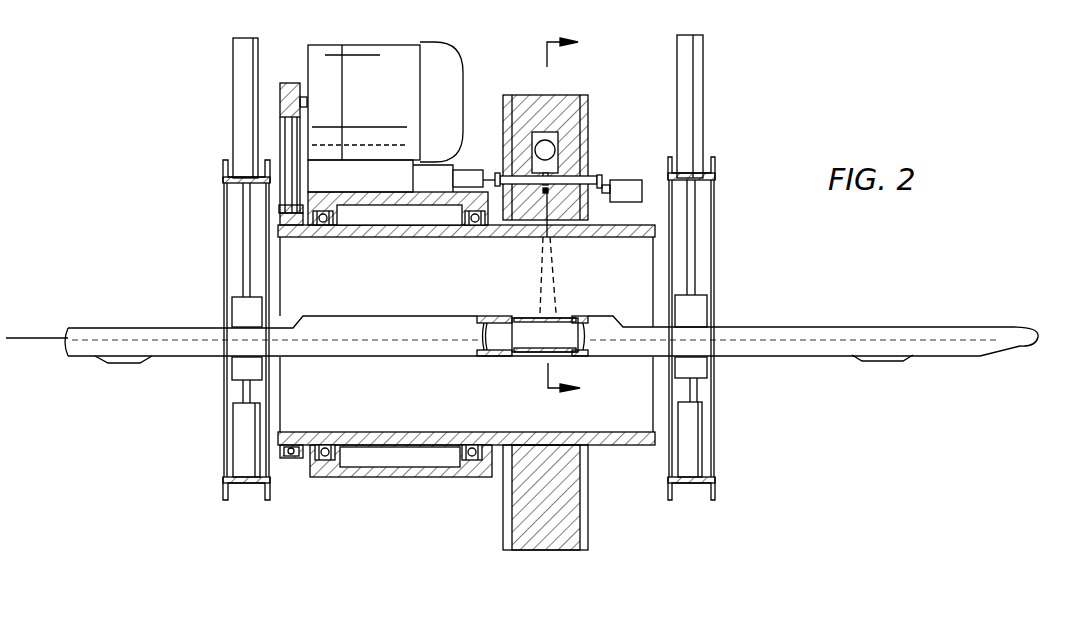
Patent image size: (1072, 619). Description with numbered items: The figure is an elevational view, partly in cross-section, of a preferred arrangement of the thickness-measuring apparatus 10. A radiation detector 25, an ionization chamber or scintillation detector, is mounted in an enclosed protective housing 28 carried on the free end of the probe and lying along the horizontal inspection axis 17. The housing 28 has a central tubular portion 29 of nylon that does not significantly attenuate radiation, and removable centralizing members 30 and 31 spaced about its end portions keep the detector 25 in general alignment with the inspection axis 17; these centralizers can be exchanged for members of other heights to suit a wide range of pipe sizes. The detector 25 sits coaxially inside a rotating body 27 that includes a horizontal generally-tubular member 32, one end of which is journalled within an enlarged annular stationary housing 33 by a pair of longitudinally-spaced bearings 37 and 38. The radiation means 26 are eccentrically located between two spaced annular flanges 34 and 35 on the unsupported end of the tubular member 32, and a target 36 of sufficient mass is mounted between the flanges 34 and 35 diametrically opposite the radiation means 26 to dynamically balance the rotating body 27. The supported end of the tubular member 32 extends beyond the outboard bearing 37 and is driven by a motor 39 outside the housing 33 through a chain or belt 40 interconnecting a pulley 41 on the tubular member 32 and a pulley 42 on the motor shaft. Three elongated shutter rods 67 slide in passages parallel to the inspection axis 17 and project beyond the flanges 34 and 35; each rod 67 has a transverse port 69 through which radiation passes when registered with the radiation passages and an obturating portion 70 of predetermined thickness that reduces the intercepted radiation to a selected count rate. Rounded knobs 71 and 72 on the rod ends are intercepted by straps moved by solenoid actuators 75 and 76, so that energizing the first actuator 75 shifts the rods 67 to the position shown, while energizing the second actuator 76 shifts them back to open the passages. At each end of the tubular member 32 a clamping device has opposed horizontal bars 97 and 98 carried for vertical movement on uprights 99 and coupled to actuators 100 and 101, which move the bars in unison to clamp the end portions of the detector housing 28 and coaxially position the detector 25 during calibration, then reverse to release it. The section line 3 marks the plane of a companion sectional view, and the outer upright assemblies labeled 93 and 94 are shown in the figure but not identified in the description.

The section line 3- 3 is at (572, 215).
The thickness-measuring apparatus 10 is at (628, 38).
The inspection axis 17 is at (31, 336).
The radiation detector 25 is at (555, 345).
The radiation means 26 is at (518, 127).
The rotating body 27 is at (602, 134).
The protective housing 28 is at (370, 358).
The central tubular portion 29 is at (530, 360).
The centralizing member 30 is at (115, 362).
The centralizing member 31 is at (885, 360).
The tubular member 32 is at (406, 230).
The stationary housing 33 is at (373, 474).
The annular flange 34 is at (506, 94).
The annular flange 35 is at (587, 98).
The target 36 is at (537, 518).
The bearing 37 is at (317, 228).
The bearing 38 is at (461, 227).
The motor 39 is at (393, 112).
The chain or belt 40 is at (283, 133).
The pulley 41 is at (297, 460).
The pulley 42 is at (297, 82).
The shutter rod 67 is at (593, 184).
The transverse port 69 is at (553, 197).
The obturating portion 70 is at (543, 199).
The rounded knob 71 is at (497, 190).
The rounded knob 72 is at (590, 186).
The solenoid actuator 75 is at (472, 170).
The solenoid actuator 76 is at (636, 186).
The left guide column 93 is at (212, 193).
The right guide column 94 is at (726, 192).
The clamping bar 97 is at (232, 307).
The clamping bar 98 is at (237, 370).
The upright 99 is at (231, 234).
The actuator 100 is at (236, 90).
The actuator 101 is at (240, 440).